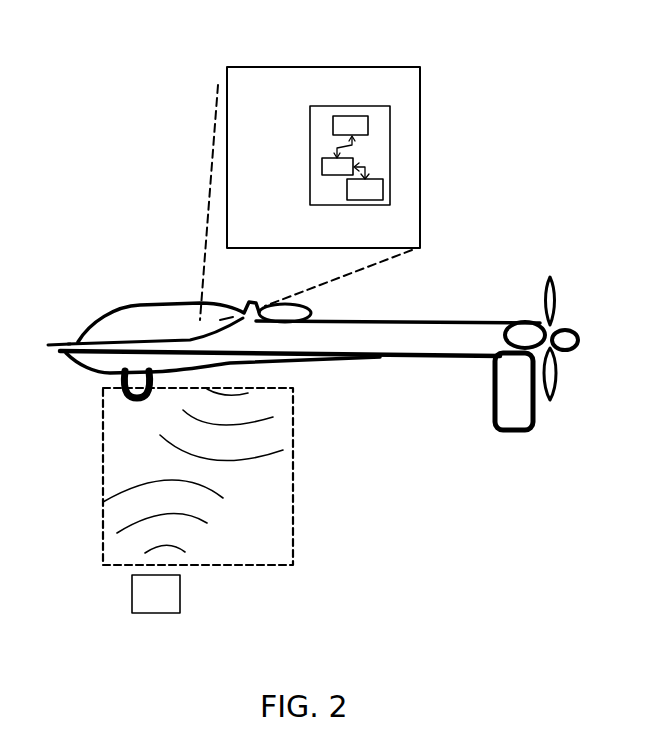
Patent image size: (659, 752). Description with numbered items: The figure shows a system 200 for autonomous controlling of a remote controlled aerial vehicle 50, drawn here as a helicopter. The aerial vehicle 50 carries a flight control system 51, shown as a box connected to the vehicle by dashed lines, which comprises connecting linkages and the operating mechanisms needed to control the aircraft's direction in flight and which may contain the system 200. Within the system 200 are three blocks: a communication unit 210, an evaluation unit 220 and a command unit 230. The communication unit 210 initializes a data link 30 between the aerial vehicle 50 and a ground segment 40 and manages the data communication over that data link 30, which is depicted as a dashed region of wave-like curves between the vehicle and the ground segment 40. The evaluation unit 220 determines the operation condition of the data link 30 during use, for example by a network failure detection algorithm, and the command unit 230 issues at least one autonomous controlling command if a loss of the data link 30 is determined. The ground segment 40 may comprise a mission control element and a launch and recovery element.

The flight control system 51 is at (240, 67).
The system for autonomous controlling of an aerial vehicle 200 is at (334, 108).
The communication unit 210 is at (363, 117).
The evaluation unit 220 is at (322, 166).
The command unit 230 is at (363, 200).
The aerial vehicle 50 is at (438, 363).
The data link 30 is at (293, 502).
The ground segment 40 is at (132, 592).